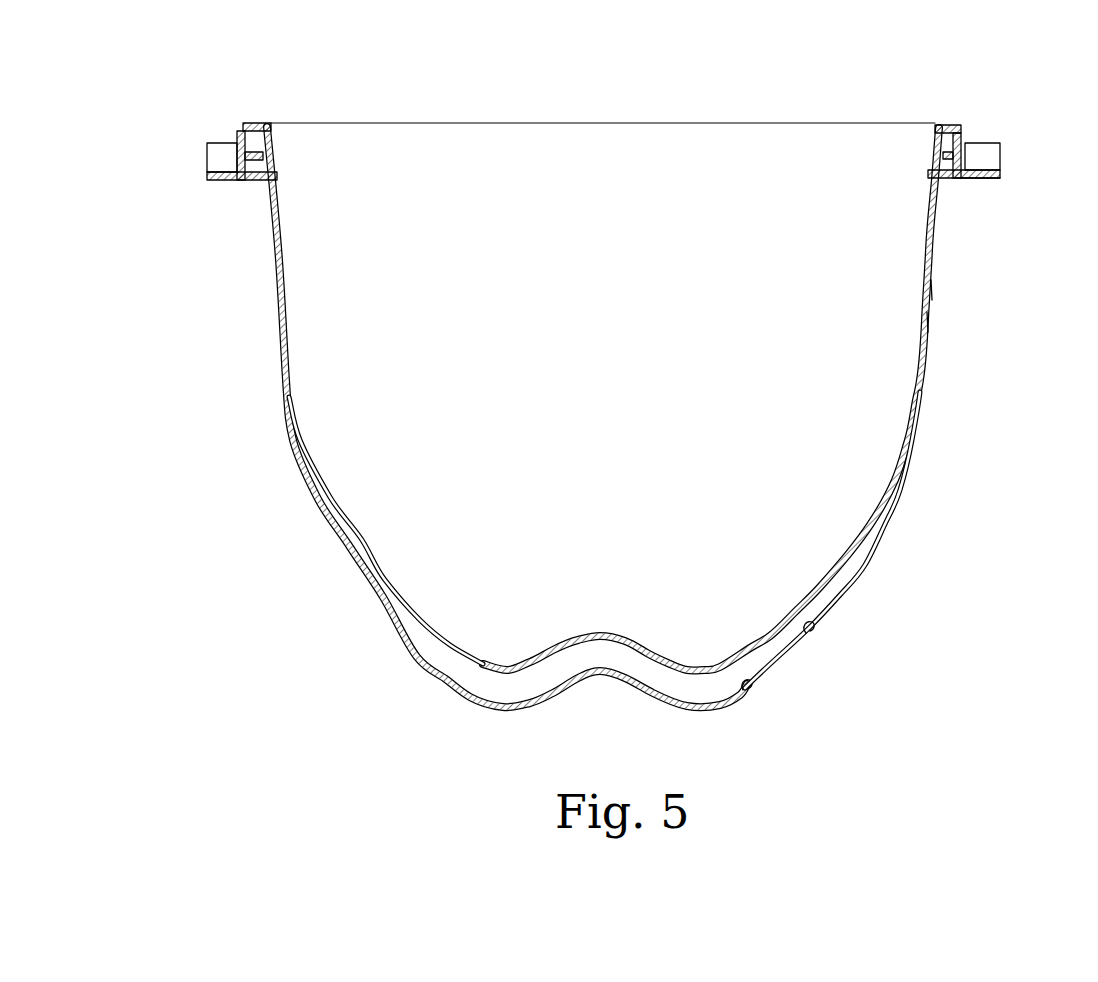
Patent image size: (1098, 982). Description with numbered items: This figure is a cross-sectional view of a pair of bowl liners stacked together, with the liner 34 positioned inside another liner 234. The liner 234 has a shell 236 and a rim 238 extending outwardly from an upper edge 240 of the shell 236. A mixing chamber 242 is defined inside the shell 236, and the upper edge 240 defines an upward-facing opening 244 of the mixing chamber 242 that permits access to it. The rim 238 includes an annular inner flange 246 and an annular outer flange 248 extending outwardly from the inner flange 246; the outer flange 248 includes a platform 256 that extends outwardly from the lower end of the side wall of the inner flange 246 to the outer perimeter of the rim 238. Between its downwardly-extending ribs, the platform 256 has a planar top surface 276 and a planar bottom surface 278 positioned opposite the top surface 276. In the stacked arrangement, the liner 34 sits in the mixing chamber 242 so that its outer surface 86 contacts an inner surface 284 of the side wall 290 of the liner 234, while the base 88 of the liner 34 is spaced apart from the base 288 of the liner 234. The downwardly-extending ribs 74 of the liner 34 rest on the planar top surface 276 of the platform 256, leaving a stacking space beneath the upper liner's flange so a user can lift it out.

The liner 34 is at (936, 102).
The ribs 74 is at (985, 157).
The outer surface 86 is at (934, 318).
The base 88 is at (750, 655).
The liner 234 is at (620, 540).
The shell 236 is at (632, 425).
The rim 238 is at (228, 170).
The upper edge 240 is at (948, 162).
The mixing chamber 242 is at (852, 571).
The opening 244 is at (1010, 168).
The inner flange 246 is at (254, 156).
The outer flange 248 is at (209, 180).
The platform 256 is at (209, 174).
The top surface 276 is at (1000, 173).
The bottom surface 278 is at (983, 178).
The inner surface 284 is at (930, 287).
The base 288 is at (737, 684).
The side wall 290 is at (610, 540).